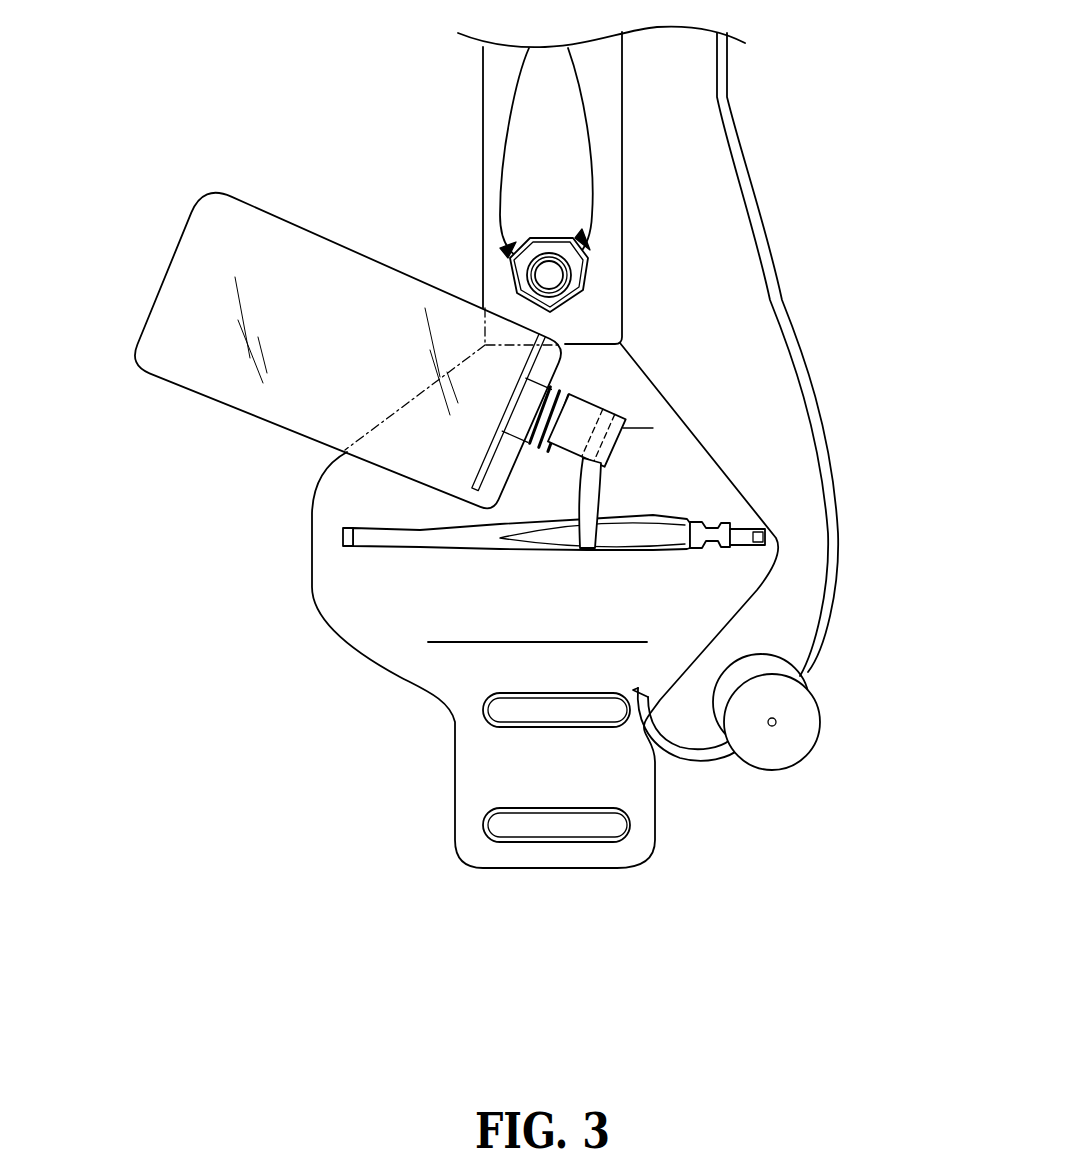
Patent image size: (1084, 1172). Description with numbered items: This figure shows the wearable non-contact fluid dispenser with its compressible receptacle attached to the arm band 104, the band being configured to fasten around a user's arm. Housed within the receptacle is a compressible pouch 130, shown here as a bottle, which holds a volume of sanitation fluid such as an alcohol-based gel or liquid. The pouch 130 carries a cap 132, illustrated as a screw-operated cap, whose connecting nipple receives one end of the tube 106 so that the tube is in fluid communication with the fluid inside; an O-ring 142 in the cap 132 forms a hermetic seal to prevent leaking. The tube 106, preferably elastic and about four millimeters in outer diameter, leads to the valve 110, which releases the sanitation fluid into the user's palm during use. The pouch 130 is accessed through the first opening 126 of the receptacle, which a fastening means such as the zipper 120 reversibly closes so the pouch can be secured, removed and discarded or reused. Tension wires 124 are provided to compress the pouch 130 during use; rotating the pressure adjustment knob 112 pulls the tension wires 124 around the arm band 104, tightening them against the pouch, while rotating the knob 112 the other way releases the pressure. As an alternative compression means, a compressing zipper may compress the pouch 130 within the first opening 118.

The arm band 104 is at (483, 152).
The tube 106 is at (758, 214).
The valve 110 is at (807, 750).
The pressure adjustment knob 112 is at (510, 273).
The first opening 118 is at (660, 556).
The zipper 120 is at (725, 515).
The tension wires 124 is at (587, 160).
The first opening 126 is at (637, 690).
The compressible pouch 130 is at (233, 410).
The cap 132 is at (601, 392).
The O-ring 142 is at (612, 400).